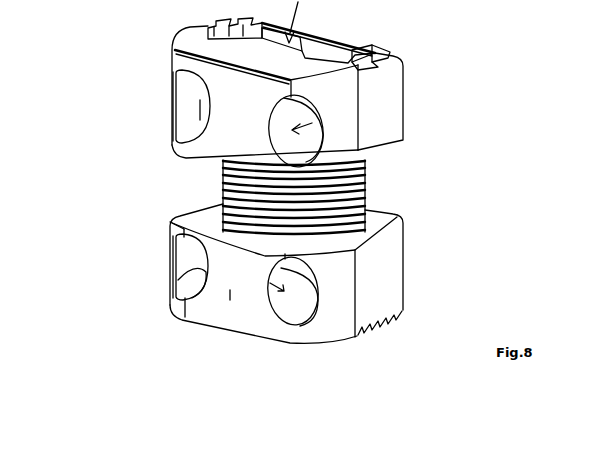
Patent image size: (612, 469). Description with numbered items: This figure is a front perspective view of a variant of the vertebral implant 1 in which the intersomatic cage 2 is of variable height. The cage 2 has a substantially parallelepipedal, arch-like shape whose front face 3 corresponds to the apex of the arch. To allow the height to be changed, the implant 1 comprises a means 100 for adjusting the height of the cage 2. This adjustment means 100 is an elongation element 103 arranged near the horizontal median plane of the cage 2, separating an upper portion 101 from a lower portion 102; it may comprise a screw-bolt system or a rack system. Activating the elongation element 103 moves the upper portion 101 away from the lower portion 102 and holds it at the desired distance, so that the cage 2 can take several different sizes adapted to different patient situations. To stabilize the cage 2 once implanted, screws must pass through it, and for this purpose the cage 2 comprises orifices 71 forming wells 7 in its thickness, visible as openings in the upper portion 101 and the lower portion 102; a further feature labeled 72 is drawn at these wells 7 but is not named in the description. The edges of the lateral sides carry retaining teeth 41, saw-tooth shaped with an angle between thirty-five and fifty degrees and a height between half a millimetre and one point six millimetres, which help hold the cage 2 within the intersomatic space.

The vertebral implant 1 is at (448, 153).
The cage 2 is at (419, 191).
The front face 3 is at (212, 138).
The well 7 is at (186, 109).
The orifice 71 is at (312, 124).
The inner contour of opening 72 is at (318, 150).
The retaining teeth 41 is at (380, 50).
The means for adjusting the height 100 is at (224, 193).
The upper portion 101 is at (172, 62).
The lower portion 102 is at (170, 296).
The elongation element 103 is at (168, 217).